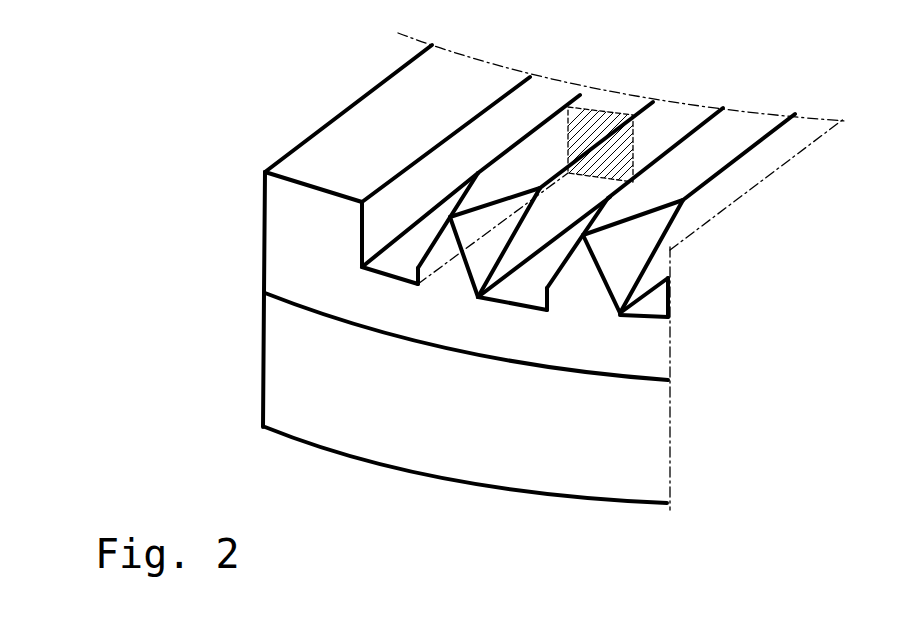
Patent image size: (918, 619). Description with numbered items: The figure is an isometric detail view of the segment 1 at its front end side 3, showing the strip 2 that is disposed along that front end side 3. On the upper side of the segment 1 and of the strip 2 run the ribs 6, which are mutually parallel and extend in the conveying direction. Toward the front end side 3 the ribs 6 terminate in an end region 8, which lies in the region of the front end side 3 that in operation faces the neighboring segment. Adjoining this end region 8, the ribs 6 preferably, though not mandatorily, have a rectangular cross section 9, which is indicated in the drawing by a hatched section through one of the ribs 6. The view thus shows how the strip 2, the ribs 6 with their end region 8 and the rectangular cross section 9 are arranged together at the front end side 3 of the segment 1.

The segment 1 is at (305, 390).
The strip 2 is at (395, 107).
The front end side 3 is at (325, 282).
The rib 6 is at (658, 130).
The end region 8 is at (415, 202).
The rectangular cross section 9 is at (575, 143).